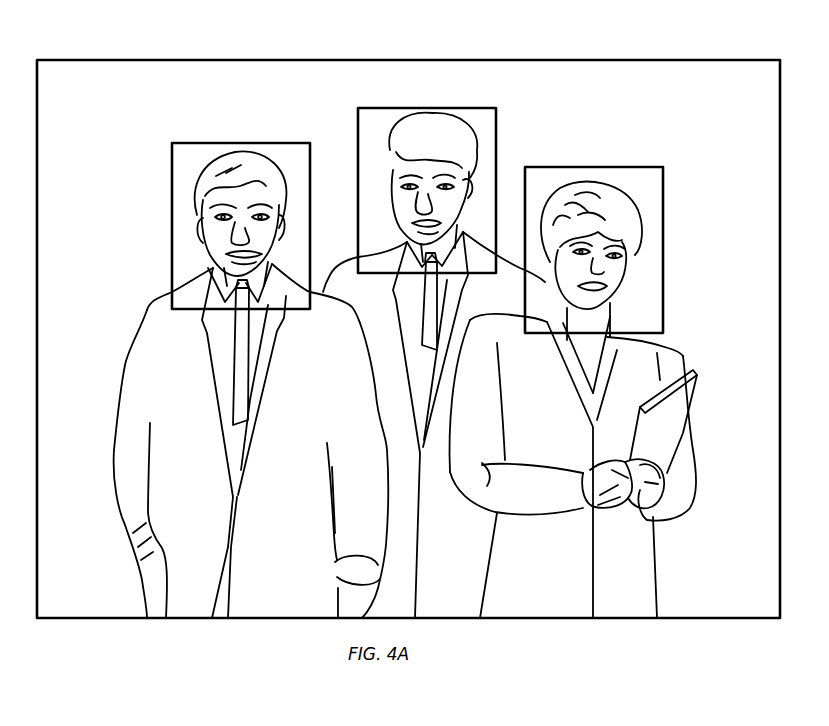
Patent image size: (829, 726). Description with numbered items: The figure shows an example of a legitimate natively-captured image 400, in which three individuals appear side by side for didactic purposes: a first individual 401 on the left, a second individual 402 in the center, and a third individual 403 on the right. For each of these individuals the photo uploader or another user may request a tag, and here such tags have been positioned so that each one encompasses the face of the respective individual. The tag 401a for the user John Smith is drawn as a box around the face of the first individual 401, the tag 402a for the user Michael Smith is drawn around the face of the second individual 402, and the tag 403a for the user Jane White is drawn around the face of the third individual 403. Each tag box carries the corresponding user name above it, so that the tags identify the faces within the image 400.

The natively-captured image 400 is at (103, 57).
The individual 401 is at (118, 396).
The tag 401a is at (171, 168).
The individual 402 is at (345, 258).
The tag 402a is at (497, 132).
The individual 403 is at (687, 437).
The tag 403a is at (663, 218).